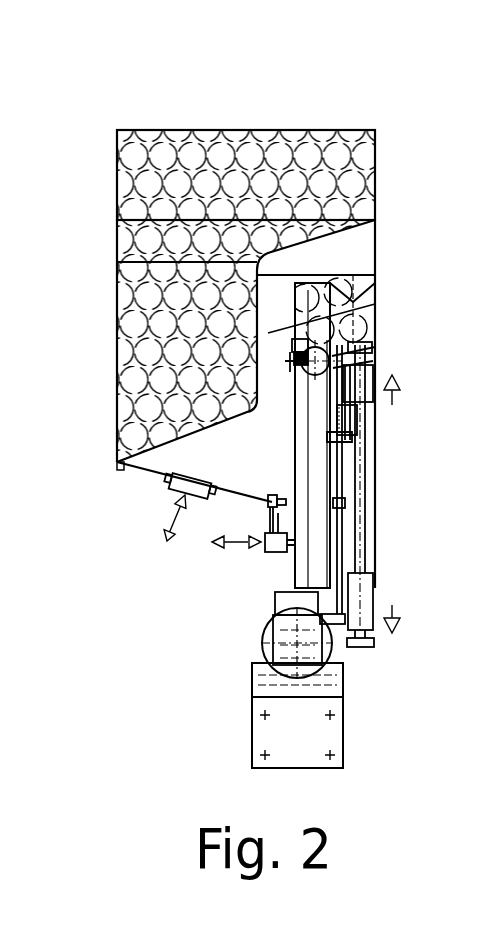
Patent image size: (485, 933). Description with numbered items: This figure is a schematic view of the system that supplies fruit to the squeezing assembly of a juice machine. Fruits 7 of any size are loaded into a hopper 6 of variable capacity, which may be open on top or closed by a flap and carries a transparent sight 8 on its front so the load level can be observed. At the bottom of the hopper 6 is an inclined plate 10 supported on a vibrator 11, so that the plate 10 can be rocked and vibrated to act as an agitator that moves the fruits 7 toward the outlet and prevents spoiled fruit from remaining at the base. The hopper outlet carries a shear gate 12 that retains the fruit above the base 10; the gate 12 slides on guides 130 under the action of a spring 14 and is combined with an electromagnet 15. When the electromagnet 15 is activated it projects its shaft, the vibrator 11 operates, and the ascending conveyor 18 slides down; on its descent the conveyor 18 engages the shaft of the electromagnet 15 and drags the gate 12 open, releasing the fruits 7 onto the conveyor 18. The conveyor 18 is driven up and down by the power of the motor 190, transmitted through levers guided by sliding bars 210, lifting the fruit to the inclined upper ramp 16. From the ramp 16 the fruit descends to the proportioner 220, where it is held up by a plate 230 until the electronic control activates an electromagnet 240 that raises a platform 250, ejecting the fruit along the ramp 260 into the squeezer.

The hopper 6 is at (213, 140).
The fruits 7 is at (183, 140).
The transparent sight 8 is at (133, 302).
The inclined plate 10 is at (138, 466).
The vibrator 11 is at (173, 491).
The shear gate 12 is at (290, 474).
The spring 14 is at (268, 523).
The electromagnet 15 is at (268, 553).
The conveyor 18 is at (297, 285).
The ramp 16 is at (362, 292).
The proportioner 220 is at (313, 327).
The ramp 260 is at (294, 352).
The plate 230 is at (298, 375).
The platform 250 is at (308, 372).
The electromagnet 240 is at (348, 423).
The sliding bars 210 is at (365, 500).
The guides 130 is at (293, 570).
The motor 190 is at (318, 647).